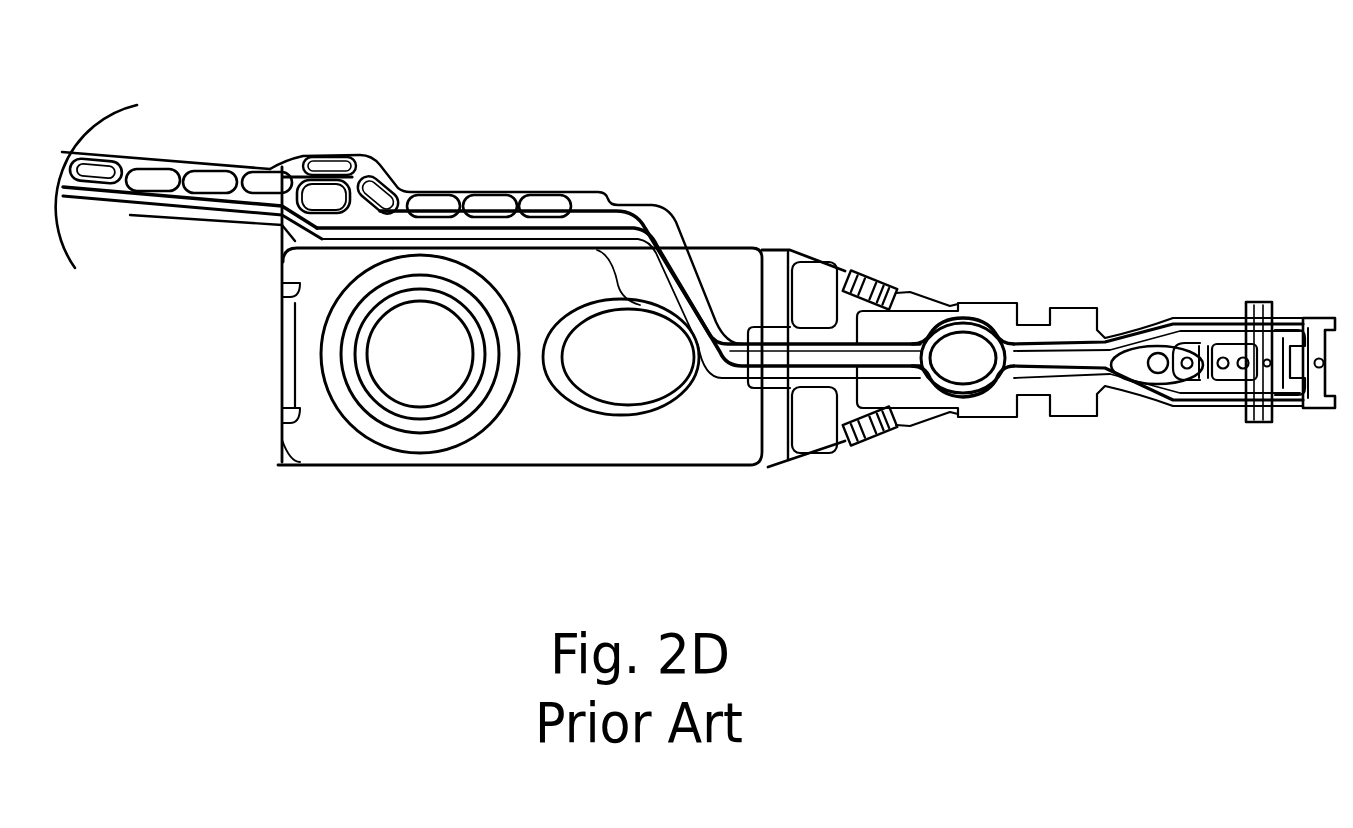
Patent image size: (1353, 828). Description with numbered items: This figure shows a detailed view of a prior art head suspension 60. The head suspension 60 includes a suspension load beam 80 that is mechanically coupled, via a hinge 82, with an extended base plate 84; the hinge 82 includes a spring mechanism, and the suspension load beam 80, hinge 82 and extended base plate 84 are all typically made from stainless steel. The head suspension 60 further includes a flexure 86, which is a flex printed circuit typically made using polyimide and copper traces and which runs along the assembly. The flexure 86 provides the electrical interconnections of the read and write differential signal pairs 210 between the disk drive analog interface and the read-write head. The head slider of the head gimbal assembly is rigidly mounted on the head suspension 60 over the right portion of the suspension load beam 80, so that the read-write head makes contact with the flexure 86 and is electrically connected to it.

The head suspension 60 is at (1342, 134).
The suspension load beam 80 is at (1338, 251).
The hinge 82 is at (770, 466).
The extended base plate 84 is at (483, 465).
The flexure 86 is at (187, 166).
The read and write differential signal pairs 210 is at (618, 230).